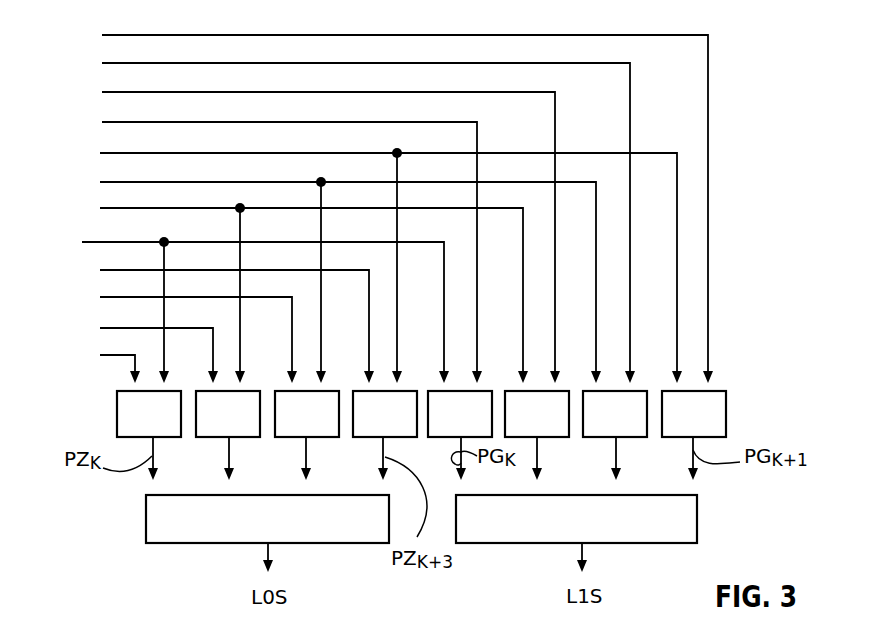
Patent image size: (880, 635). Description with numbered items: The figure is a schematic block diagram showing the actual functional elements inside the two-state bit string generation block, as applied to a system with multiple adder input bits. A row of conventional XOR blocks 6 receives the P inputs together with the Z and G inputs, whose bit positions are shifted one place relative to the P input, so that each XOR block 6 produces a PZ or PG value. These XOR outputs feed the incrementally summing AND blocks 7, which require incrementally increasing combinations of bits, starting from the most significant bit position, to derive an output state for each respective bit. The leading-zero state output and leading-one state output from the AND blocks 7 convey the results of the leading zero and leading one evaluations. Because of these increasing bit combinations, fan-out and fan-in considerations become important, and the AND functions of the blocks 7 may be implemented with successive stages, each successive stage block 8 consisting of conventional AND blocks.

The XOR block 6 is at (100, 418).
The incrementally summing AND block 7 is at (122, 520).
The successive stage block 8 is at (40, 330).